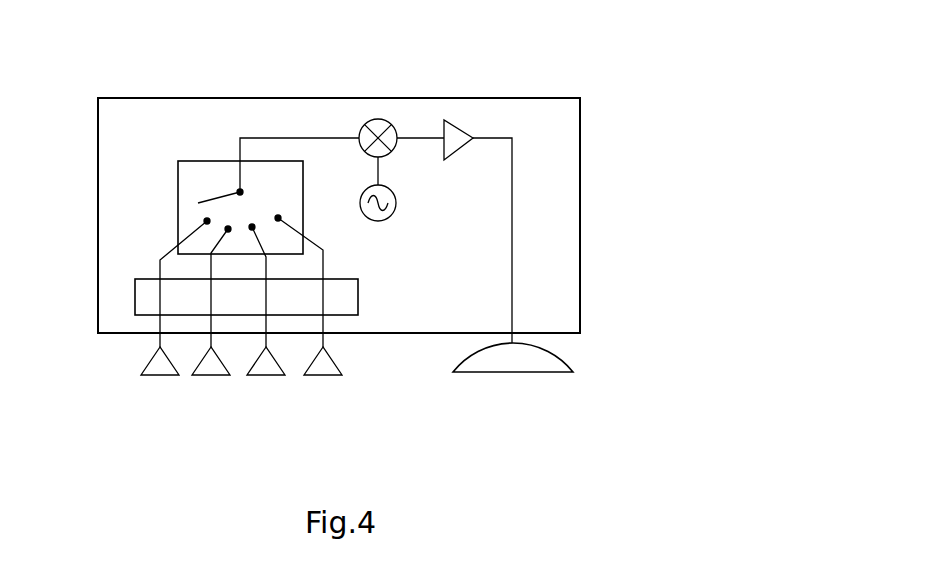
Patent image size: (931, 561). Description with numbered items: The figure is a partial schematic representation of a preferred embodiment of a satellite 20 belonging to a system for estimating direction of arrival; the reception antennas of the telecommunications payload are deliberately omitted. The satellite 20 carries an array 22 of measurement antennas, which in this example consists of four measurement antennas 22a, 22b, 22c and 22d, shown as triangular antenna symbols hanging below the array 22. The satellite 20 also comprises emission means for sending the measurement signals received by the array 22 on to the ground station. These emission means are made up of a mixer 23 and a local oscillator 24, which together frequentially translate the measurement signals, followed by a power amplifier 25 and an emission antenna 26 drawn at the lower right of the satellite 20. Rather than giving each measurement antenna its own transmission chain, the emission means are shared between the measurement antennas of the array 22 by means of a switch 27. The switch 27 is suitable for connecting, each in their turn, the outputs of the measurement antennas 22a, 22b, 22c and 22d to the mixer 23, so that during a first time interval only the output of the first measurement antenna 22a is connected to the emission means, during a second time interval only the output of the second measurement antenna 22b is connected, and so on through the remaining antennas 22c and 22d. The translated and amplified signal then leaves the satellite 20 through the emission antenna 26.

The satellite 20 is at (113, 97).
The array of measurement antennas 22 is at (135, 291).
The first measurement antenna 22a is at (160, 376).
The second measurement antenna 22b is at (211, 376).
The third measurement antenna 22c is at (266, 376).
The fourth measurement antenna 22d is at (332, 378).
The mixer 23 is at (378, 119).
The local oscillator 24 is at (390, 217).
The power amplifier 25 is at (463, 135).
The emission antenna 26 is at (557, 356).
The switch 27 is at (203, 161).